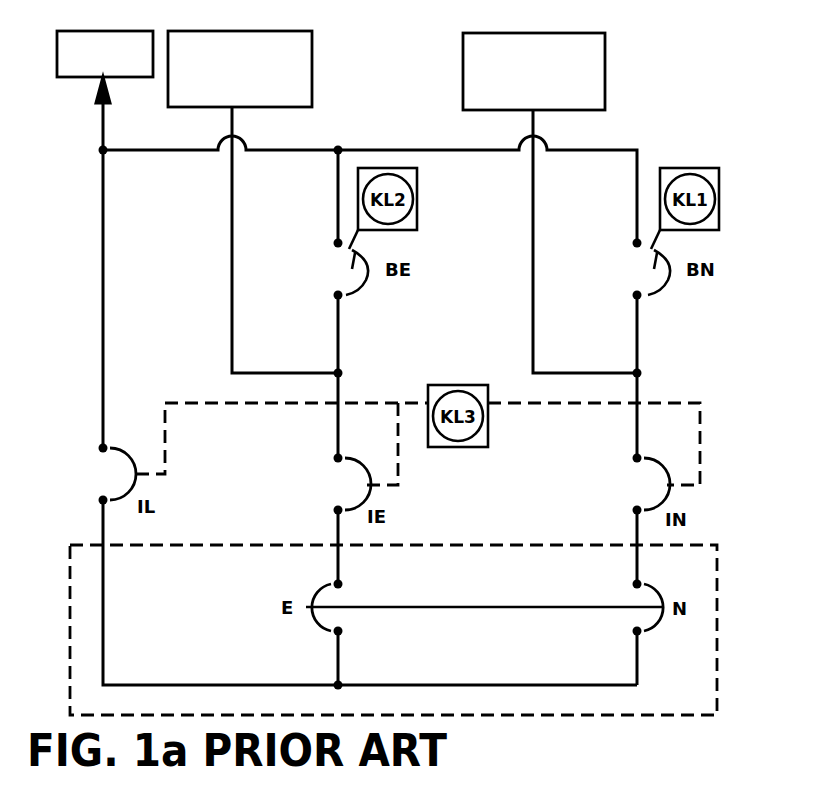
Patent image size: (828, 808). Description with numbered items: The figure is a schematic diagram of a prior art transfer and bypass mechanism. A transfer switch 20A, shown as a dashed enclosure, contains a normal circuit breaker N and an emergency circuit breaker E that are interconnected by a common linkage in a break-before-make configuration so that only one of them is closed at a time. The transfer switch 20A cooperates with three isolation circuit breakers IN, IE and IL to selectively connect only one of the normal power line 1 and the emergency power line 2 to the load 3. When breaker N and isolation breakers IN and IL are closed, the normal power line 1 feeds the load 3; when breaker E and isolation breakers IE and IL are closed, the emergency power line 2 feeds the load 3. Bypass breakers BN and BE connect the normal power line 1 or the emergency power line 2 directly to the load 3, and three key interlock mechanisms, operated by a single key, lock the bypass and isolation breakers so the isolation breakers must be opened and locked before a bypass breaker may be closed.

The normal power line 1 is at (605, 80).
The emergency power line 2 is at (312, 78).
The load 3 is at (83, 78).
The transfer switch 20A is at (486, 717).